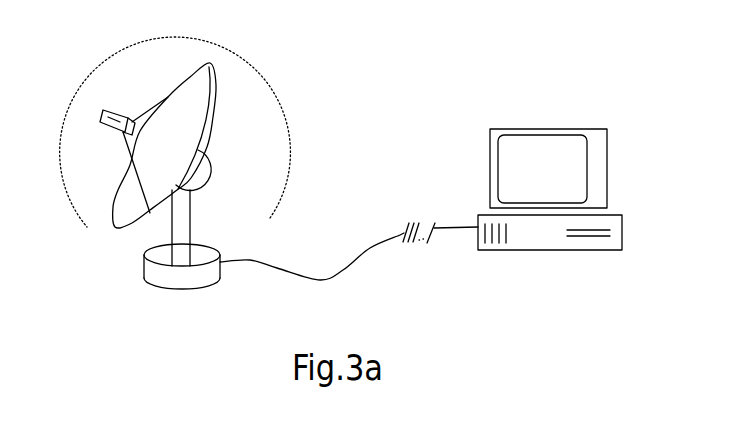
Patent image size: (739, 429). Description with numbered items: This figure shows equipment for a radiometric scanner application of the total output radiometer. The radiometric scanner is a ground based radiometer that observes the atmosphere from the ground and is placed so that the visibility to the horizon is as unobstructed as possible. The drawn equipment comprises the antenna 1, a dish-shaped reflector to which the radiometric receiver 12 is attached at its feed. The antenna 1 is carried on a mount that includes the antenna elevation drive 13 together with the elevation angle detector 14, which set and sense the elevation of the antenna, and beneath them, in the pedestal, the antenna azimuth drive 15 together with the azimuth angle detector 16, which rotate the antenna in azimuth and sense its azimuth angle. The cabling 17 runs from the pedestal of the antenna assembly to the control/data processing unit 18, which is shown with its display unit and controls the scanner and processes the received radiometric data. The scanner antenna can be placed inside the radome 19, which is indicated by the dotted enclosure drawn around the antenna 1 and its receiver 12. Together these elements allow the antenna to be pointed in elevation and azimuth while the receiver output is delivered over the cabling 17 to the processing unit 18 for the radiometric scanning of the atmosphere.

The antenna 1 is at (218, 82).
The radiometric receiver 12 is at (103, 121).
The antenna elevation drive 13 is at (206, 153).
The elevation angle detector 14 is at (196, 181).
The antenna azimuth drive 15 is at (167, 280).
The azimuth angle detector 16 is at (195, 279).
The cabling 17 is at (343, 268).
The control/data processing unit 18 is at (535, 157).
The radome 19 is at (248, 67).